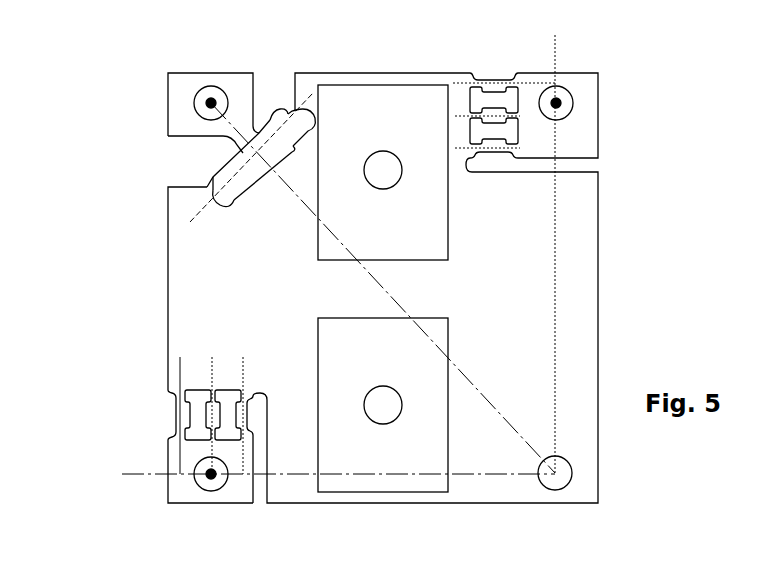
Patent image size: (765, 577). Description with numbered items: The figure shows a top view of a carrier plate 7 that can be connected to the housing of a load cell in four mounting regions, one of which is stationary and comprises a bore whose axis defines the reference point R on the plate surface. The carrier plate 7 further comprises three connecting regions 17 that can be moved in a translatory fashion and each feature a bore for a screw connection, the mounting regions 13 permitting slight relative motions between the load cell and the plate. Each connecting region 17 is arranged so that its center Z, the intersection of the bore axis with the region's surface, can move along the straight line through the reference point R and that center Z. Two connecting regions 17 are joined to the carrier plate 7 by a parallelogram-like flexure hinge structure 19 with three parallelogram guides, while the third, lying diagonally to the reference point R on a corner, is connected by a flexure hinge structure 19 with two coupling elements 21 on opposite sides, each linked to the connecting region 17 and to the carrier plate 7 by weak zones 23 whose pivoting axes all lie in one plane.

The carrier plate 7 is at (598, 272).
The mounting region 13 is at (160, 153).
The connecting region 17 is at (173, 104).
The flexure hinge structure 19 is at (500, 67).
The coupling element 21 is at (281, 110).
The weak zone 23 is at (300, 110).
The center of connecting region Z is at (211, 103).
The reference point R is at (550, 490).